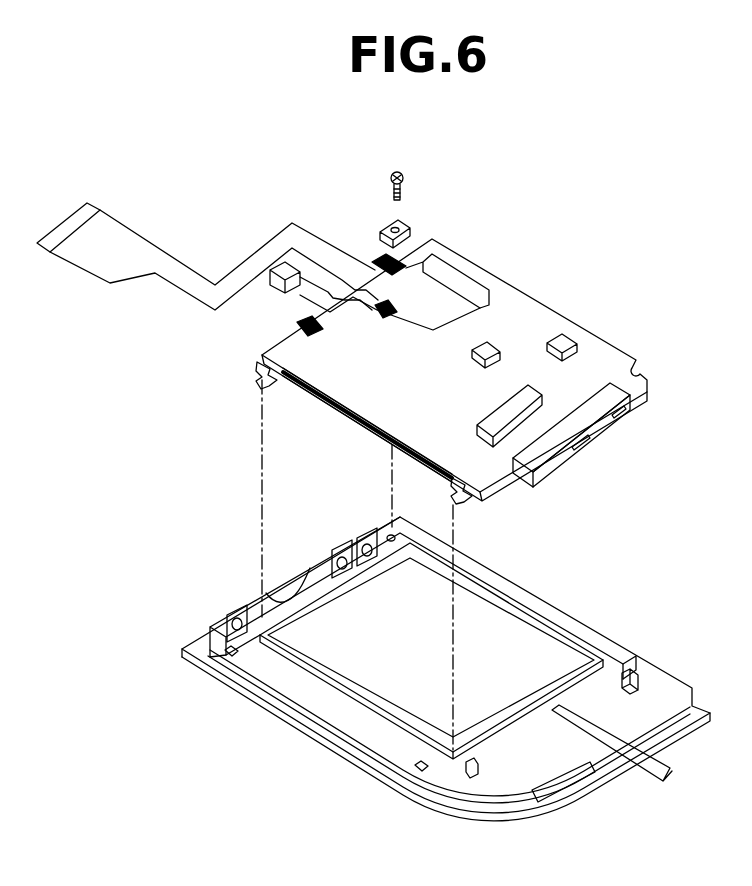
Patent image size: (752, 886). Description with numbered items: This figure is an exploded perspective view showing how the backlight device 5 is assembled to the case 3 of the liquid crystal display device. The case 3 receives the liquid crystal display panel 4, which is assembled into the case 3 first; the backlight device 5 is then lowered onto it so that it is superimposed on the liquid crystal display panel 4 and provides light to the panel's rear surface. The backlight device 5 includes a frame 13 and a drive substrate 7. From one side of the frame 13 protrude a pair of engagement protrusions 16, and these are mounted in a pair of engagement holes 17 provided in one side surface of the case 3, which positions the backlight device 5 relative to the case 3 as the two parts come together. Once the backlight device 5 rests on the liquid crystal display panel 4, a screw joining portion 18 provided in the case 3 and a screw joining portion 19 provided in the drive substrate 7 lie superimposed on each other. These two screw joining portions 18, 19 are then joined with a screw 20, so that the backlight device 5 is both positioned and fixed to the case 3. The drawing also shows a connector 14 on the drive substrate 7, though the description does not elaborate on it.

The case 3 is at (310, 729).
The liquid crystal display panel 4 is at (425, 707).
The backlight device 5 is at (461, 250).
The drive substrate 7 is at (518, 308).
The frame 13 is at (373, 440).
The connector 14 is at (562, 460).
The engagement protrusions 16 is at (259, 387).
The engagement holes 17 is at (232, 656).
The screw joining portion 18 is at (388, 533).
The screw joining portion 19 is at (380, 232).
The screw 20 is at (395, 172).